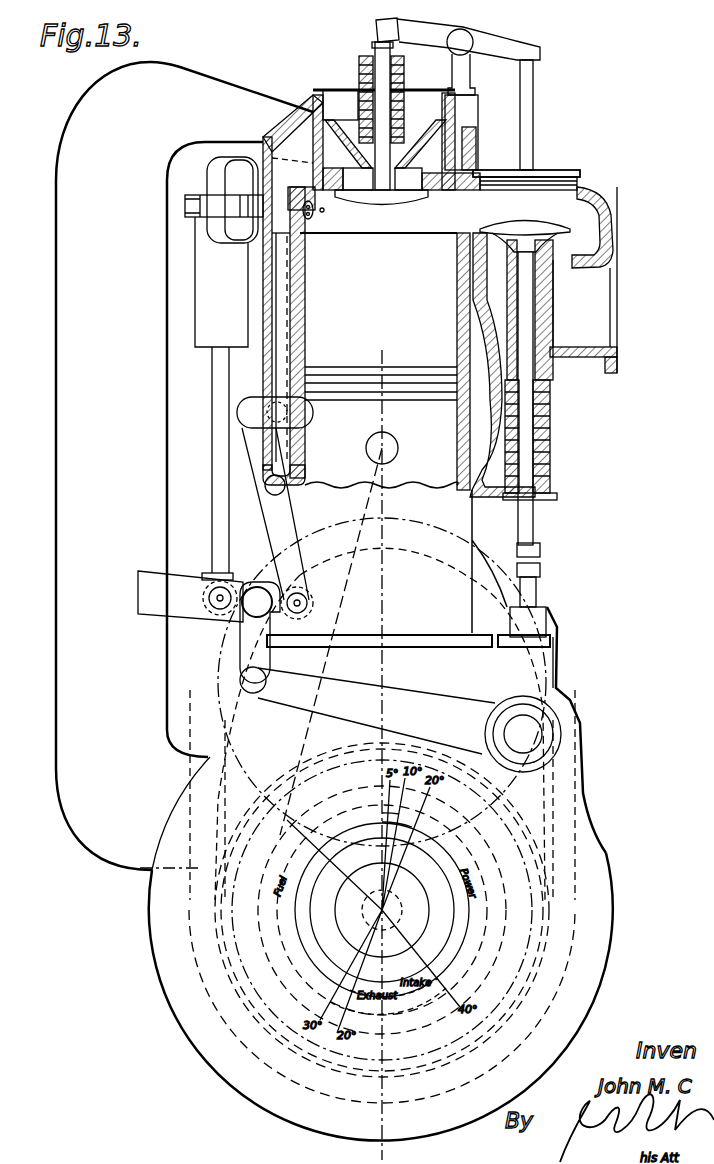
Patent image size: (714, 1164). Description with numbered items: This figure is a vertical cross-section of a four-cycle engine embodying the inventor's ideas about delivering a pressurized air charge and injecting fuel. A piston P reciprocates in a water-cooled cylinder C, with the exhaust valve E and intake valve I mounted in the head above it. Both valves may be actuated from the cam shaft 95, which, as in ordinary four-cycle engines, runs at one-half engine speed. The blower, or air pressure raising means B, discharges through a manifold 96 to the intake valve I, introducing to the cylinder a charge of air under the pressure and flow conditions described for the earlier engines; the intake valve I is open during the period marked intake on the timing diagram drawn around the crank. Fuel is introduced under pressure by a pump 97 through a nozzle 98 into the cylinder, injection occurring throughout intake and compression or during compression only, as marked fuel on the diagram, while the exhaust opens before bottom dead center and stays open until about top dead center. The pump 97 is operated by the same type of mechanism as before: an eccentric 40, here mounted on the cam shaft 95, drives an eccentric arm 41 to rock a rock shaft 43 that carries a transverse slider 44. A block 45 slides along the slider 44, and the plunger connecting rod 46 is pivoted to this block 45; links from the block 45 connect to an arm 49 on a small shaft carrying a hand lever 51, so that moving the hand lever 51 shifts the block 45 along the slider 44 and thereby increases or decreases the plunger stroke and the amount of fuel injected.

The manifold 96 is at (80, 409).
The pump 97 is at (206, 295).
The nozzle 98 is at (323, 213).
The hand lever 51 is at (290, 356).
The plunger connecting rod 46 is at (220, 460).
The transverse slider 44 is at (186, 580).
The block 45 is at (230, 585).
The rock shaft 43 is at (250, 604).
The arm 49 is at (283, 530).
The eccentric arm 41 is at (428, 739).
The eccentric 40 is at (513, 760).
The cam shaft 95 is at (533, 732).
The cylinder C is at (314, 319).
The piston P is at (379, 360).
The intake valve I is at (410, 198).
The exhaust valve E is at (545, 228).
The blower B is at (447, 676).